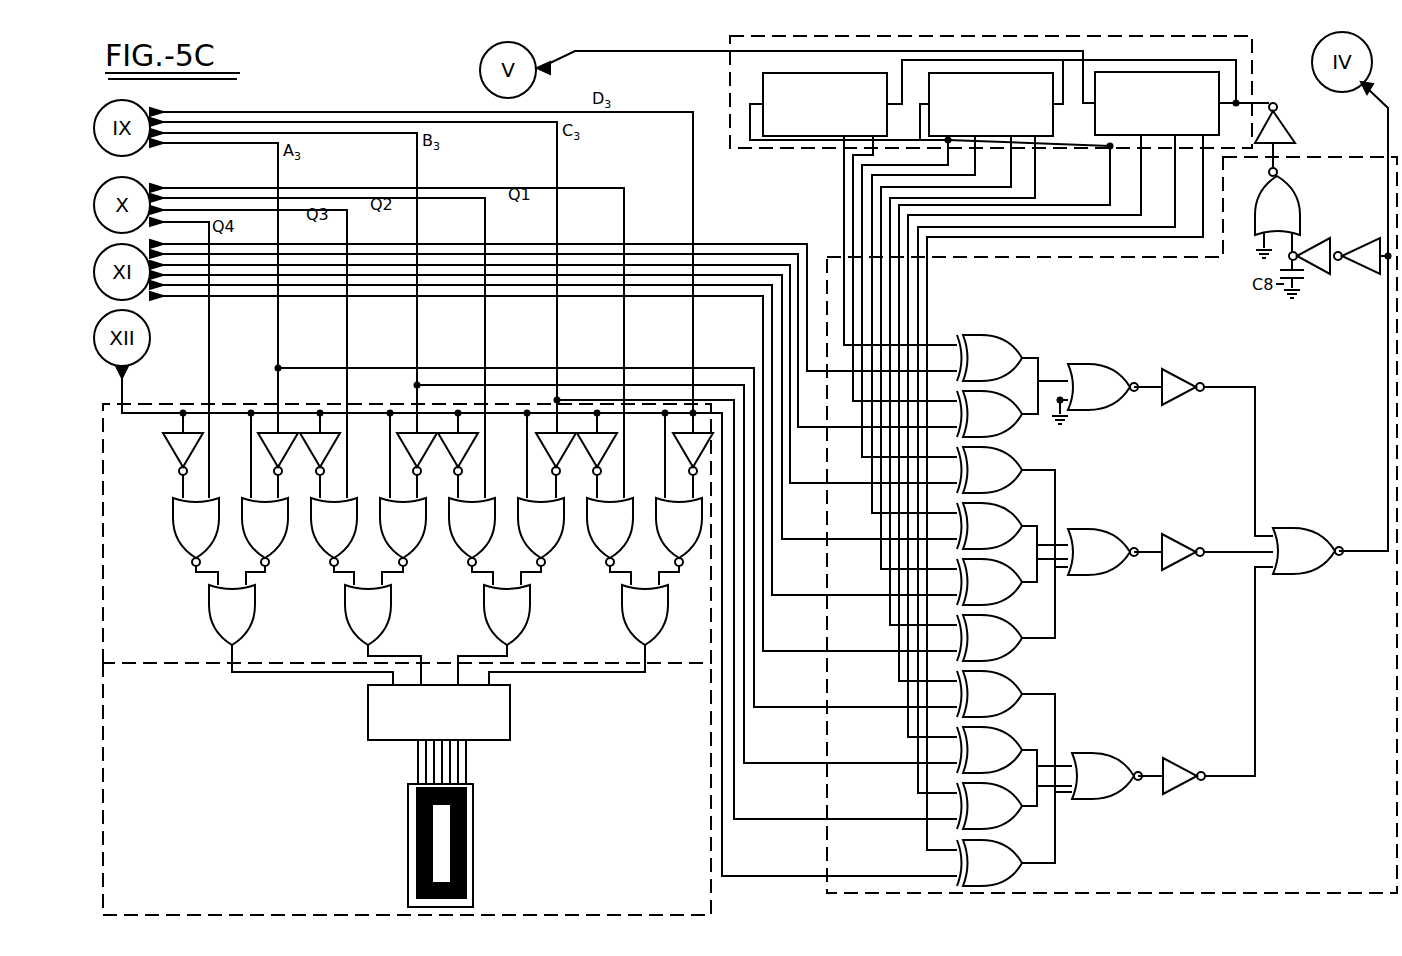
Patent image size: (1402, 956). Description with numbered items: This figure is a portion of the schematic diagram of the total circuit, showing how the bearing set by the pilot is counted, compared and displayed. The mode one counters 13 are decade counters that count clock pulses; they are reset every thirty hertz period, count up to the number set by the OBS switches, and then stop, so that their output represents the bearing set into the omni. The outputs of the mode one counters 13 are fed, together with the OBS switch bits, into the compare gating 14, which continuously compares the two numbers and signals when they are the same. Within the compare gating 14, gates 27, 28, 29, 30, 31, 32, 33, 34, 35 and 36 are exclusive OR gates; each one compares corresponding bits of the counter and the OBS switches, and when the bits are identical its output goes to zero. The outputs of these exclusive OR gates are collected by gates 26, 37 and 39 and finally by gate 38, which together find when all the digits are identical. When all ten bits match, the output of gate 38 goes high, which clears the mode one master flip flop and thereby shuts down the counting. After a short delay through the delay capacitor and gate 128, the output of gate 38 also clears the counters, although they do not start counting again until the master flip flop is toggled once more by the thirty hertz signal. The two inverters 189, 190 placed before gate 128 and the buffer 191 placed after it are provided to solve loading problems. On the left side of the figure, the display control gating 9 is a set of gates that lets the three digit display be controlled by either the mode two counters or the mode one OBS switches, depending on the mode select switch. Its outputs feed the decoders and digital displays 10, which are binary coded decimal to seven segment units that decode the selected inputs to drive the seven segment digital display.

The display control gating 9 is at (160, 670).
The decoders and digital displays 10 is at (245, 915).
The mode 1 counters 13 is at (730, 82).
The compare gating 14 is at (1397, 655).
The gate 26 is at (1103, 552).
The exclusive OR gate 27 is at (989, 358).
The exclusive OR gate 28 is at (989, 414).
The exclusive OR gate 29 is at (989, 470).
The exclusive OR gate 30 is at (989, 526).
The exclusive OR gate 31 is at (989, 582).
The exclusive OR gate 32 is at (989, 638).
The exclusive OR gate 33 is at (989, 694).
The exclusive OR gate 34 is at (989, 750).
The exclusive OR gate 35 is at (989, 806).
The exclusive OR gate 36 is at (989, 863).
The gate 37 is at (1107, 776).
The gate 38 is at (1308, 551).
The gate 39 is at (1103, 387).
The gate 128 is at (1277, 201).
The inverter 189 is at (1310, 242).
The inverter 190 is at (1356, 268).
The buffer 191 is at (1290, 115).